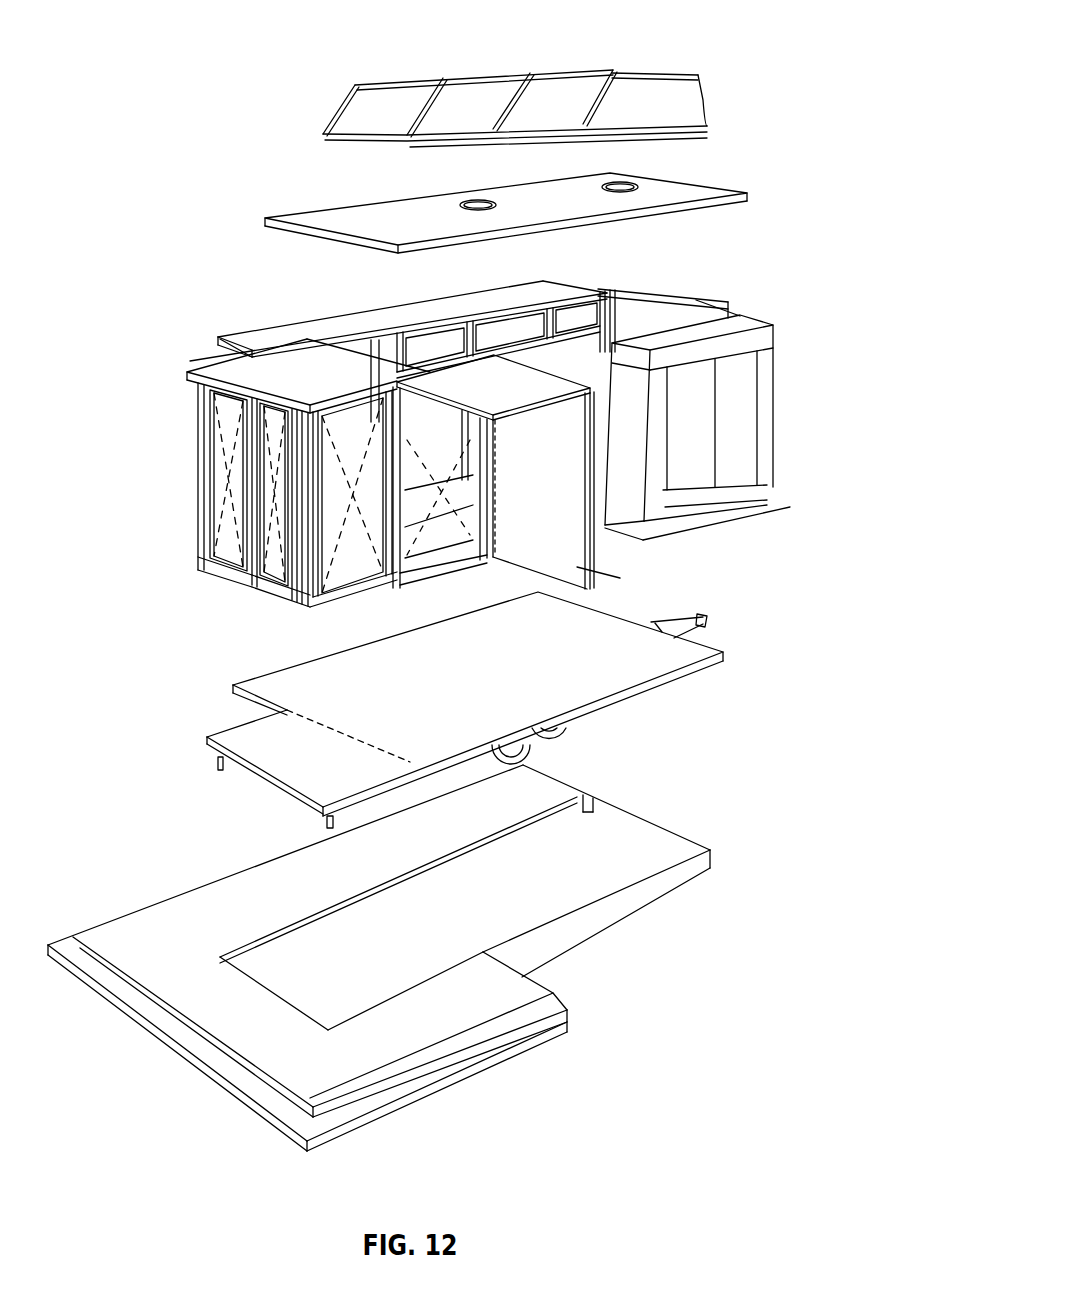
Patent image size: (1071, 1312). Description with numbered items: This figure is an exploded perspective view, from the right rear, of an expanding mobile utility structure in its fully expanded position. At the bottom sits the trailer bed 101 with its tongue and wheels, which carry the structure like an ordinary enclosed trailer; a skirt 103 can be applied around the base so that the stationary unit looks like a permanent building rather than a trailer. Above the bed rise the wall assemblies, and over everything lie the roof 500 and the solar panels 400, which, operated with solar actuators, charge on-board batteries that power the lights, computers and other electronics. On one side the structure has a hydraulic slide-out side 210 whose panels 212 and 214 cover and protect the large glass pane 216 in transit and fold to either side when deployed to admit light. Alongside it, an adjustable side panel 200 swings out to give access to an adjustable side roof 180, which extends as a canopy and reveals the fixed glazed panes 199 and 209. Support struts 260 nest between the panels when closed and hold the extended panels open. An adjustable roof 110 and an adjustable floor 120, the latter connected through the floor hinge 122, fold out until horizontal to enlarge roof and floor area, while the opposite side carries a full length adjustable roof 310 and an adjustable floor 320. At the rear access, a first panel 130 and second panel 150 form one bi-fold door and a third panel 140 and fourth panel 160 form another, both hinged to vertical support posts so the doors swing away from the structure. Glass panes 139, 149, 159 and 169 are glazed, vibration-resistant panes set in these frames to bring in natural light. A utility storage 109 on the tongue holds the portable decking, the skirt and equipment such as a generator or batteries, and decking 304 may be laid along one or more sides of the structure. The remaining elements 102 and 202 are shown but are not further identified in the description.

The trailer bed 101 is at (459, 710).
The trailer hitch 102 is at (723, 652).
The skirt 103 is at (426, 958).
The utility storage 109 is at (696, 300).
The adjustable roof 110 is at (245, 447).
The adjustable floor 120 is at (197, 742).
The floor hinge 122 is at (338, 730).
The first panel 130 is at (276, 507).
The glass pane 139 is at (225, 402).
The third panel 140 is at (347, 590).
The glass pane 149 is at (352, 495).
The second panel 150 is at (215, 567).
The glass pane 159 is at (228, 480).
The fourth panel 160 is at (285, 587).
The glass pane 169 is at (277, 494).
The adjustable side roof 180 is at (533, 385).
The glass pane 199 is at (353, 365).
The adjustable side panel 200 is at (585, 572).
The door frame 202 is at (497, 443).
The glass pane 209 is at (440, 487).
The hydraulic slide-out side 210 is at (739, 437).
The panel 212 is at (763, 407).
The panel 214 is at (650, 472).
The glass pane 216 is at (732, 390).
The support struts 260 is at (374, 432).
The decking 304 is at (520, 978).
The full length adjustable roof 310 is at (270, 333).
The adjustable floor 320 is at (250, 684).
The solar panels 400 is at (700, 128).
The roof 500 is at (742, 192).